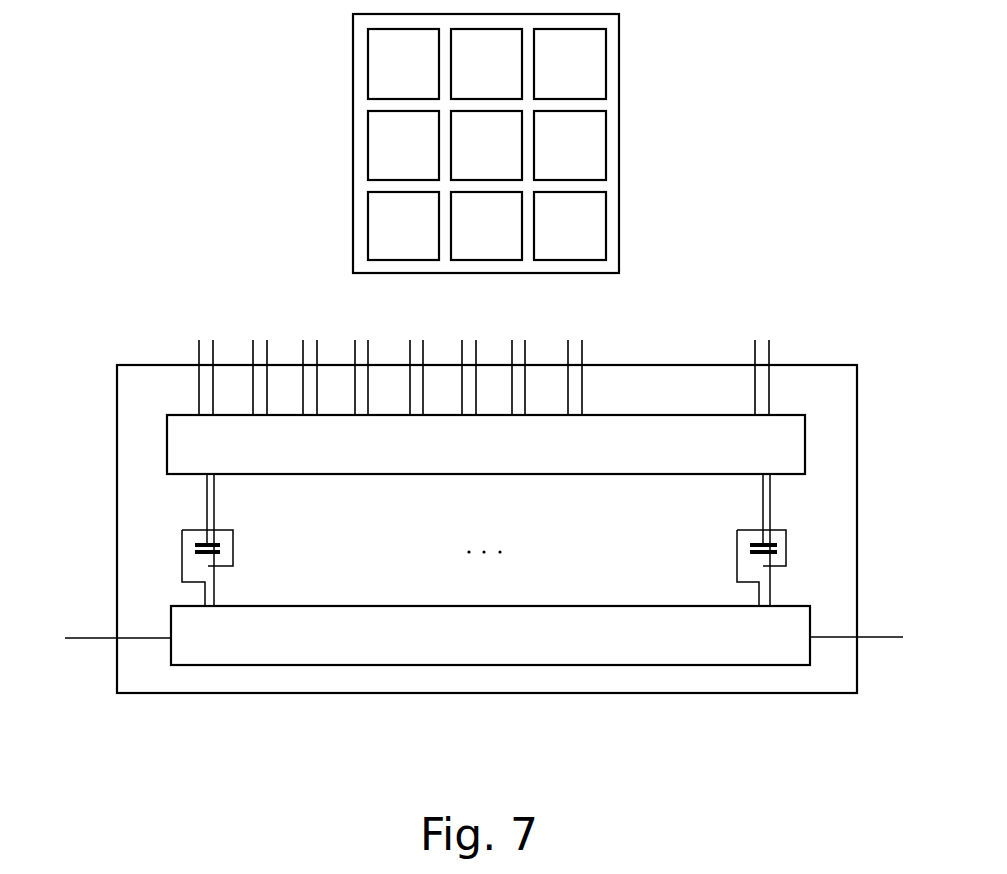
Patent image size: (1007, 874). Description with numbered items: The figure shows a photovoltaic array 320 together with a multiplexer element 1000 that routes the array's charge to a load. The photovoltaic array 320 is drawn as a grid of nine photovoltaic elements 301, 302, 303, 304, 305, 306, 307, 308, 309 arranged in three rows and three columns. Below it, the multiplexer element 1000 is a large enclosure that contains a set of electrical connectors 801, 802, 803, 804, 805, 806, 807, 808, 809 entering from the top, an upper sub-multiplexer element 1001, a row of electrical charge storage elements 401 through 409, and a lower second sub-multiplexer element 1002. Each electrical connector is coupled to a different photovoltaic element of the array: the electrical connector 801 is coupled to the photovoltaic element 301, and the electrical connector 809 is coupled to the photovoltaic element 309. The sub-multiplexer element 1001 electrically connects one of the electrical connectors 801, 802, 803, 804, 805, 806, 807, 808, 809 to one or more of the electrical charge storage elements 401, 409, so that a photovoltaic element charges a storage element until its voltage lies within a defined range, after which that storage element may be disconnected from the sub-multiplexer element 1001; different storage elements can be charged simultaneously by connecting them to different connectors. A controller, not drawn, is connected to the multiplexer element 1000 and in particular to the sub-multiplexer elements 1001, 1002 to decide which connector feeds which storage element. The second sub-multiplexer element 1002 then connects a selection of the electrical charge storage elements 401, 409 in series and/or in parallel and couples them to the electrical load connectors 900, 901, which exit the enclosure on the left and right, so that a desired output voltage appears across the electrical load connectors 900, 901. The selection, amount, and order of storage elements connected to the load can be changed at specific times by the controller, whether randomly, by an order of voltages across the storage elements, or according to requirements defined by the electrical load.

The photovoltaic element 301 is at (403, 64).
The photovoltaic element 302 is at (486, 64).
The photovoltaic element 303 is at (570, 64).
The photovoltaic element 304 is at (403, 145).
The photovoltaic element 305 is at (486, 145).
The photovoltaic element 306 is at (570, 145).
The photovoltaic element 307 is at (403, 226).
The photovoltaic element 308 is at (486, 226).
The photovoltaic element 309 is at (570, 226).
The photovoltaic array 320 is at (647, 14).
The electrical connector 801 is at (204, 361).
The electrical connector 802 is at (257, 362).
The electrical connector 803 is at (308, 360).
The electrical connector 804 is at (361, 360).
The electrical connector 805 is at (415, 361).
The electrical connector 806 is at (467, 362).
The electrical connector 807 is at (517, 361).
The electrical connector 808 is at (573, 361).
The electrical connector 809 is at (767, 361).
The sub-multiplexer element 1001 is at (486, 444).
The second sub-multiplexer element 1002 is at (490, 635).
The electrical charge storage element 401 is at (190, 542).
The electrical charge storage element 409 is at (743, 542).
The multiplexer element 1000 is at (857, 503).
The electrical load connector 900 is at (99, 636).
The electrical load connector 901 is at (880, 636).